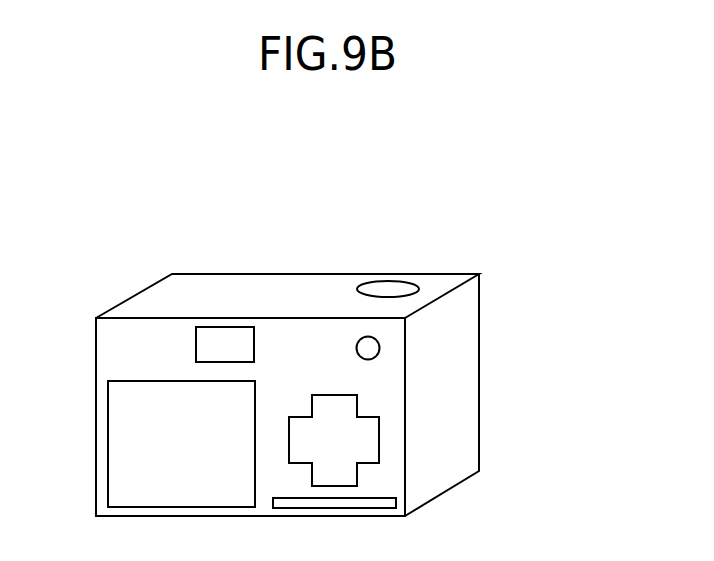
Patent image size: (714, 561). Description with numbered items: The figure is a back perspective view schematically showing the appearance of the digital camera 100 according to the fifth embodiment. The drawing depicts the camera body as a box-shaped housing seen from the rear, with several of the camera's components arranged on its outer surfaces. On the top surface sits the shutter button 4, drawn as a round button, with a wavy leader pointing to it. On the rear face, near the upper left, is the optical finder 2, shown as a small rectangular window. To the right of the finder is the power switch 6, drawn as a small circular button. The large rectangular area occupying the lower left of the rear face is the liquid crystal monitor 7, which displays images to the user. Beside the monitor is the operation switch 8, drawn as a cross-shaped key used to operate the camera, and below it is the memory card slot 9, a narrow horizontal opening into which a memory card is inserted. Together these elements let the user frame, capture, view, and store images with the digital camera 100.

The digital camera 100 is at (480, 208).
The optical finder 2 is at (227, 338).
The shutter button 4 is at (387, 290).
The power switch 6 is at (372, 350).
The liquid crystal monitor 7 is at (127, 417).
The operation switch 8 is at (372, 436).
The memory card slot 9 is at (375, 502).